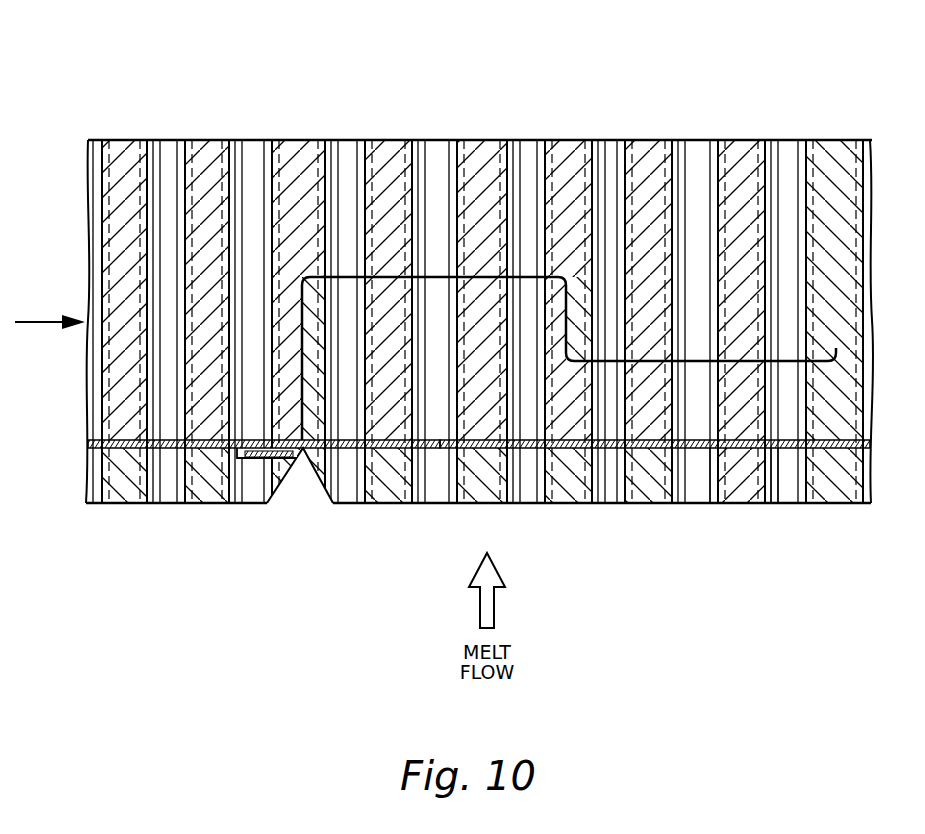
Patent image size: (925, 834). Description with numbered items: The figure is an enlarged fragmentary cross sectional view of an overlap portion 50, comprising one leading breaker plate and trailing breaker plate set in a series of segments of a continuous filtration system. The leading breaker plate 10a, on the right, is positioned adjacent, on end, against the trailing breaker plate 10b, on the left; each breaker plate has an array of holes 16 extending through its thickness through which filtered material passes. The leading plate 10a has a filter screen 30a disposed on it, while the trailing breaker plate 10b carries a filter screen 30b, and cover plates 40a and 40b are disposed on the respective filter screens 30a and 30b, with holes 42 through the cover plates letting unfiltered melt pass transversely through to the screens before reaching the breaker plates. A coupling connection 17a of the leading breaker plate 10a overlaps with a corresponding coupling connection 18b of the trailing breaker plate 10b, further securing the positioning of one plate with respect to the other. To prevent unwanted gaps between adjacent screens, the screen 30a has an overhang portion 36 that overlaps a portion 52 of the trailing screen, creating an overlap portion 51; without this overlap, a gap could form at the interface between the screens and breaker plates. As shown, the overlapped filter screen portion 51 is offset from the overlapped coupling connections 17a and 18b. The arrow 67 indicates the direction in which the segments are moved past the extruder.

The overlap portion 50 is at (564, 112).
The leading breaker plate 10a is at (862, 137).
The trailing breaker plate 10b is at (217, 139).
The holes 16 is at (342, 140).
The coupling connection 17a is at (482, 290).
The coupling connection 18b is at (735, 175).
The arrow 67 is at (40, 320).
The cover plate 40a is at (566, 514).
The cover plate 40b is at (127, 508).
The filter screen 30a is at (437, 460).
The filter screen 30b is at (172, 460).
The portion of filter screen 52 is at (279, 523).
The overlap portion 51 is at (292, 470).
The overhang portion 36 is at (300, 500).
The holes 42 is at (782, 492).